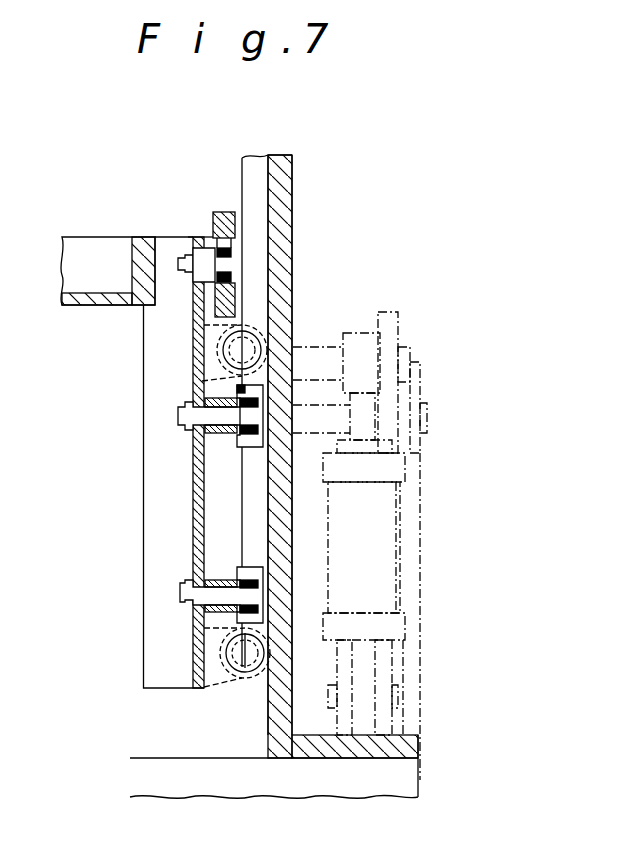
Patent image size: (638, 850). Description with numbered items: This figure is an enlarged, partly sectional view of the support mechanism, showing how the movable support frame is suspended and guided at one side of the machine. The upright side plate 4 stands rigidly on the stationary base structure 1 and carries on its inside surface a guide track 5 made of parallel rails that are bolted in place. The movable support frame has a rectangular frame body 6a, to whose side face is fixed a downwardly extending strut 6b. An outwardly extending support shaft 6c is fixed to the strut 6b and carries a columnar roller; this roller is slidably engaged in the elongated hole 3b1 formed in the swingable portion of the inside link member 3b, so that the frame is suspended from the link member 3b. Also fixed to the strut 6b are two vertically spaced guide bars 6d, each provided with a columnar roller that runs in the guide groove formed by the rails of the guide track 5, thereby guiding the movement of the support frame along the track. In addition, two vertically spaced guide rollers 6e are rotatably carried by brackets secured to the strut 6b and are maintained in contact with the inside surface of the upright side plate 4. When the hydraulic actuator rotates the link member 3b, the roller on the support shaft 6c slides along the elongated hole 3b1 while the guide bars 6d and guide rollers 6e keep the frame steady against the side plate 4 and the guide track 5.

The stationary base structure 1 is at (372, 782).
The upright side plate 4 is at (287, 182).
The guide track 5 is at (236, 163).
The inside link member 3b is at (222, 212).
The elongated hole 3b1 is at (200, 313).
The rectangular frame body 6a is at (101, 252).
The strut 6b is at (150, 541).
The support shaft 6c is at (217, 238).
The guide bar 6d is at (237, 394).
The guide roller 6e is at (252, 350).